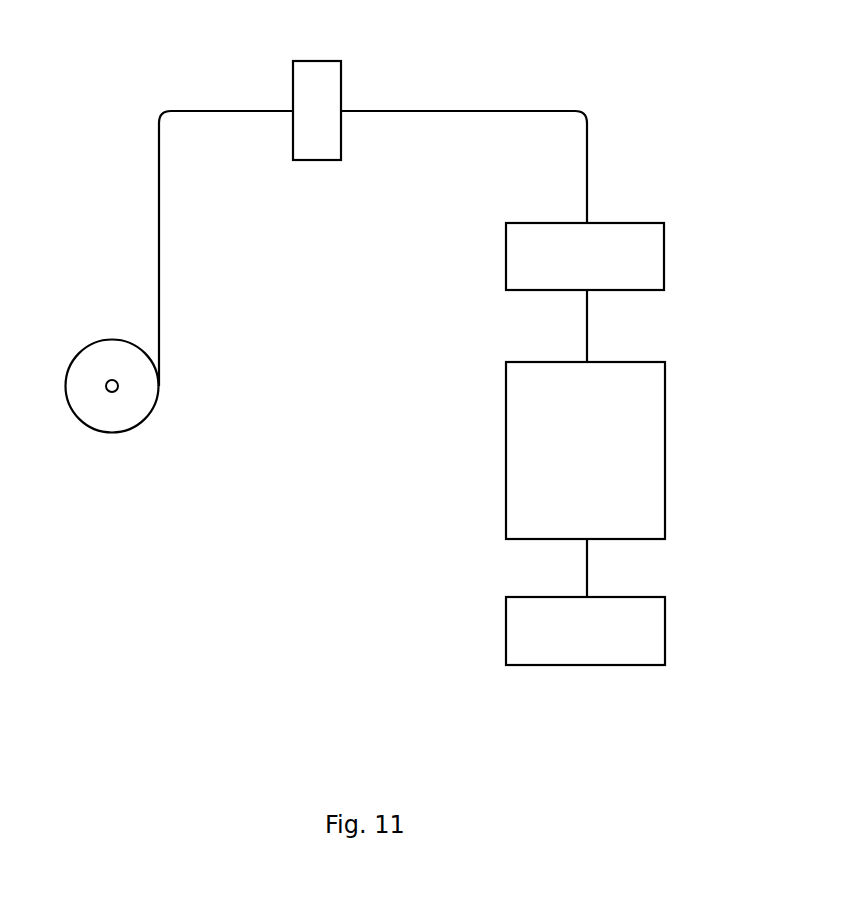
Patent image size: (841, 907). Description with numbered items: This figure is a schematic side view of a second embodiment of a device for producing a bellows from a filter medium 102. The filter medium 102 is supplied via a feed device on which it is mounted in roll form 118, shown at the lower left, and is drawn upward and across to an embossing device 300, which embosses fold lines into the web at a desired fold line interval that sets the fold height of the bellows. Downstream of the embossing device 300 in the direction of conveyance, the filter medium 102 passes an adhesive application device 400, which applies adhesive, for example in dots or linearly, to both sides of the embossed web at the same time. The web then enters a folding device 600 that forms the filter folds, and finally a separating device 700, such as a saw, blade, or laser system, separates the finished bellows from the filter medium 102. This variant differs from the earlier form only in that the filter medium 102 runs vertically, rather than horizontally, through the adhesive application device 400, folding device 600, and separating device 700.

The filter medium 102 is at (158, 243).
The embossing device 300 is at (341, 67).
The adhesive application device 400 is at (627, 223).
The folding device 600 is at (506, 424).
The separating device 700 is at (506, 653).
The roll form 118 is at (112, 432).